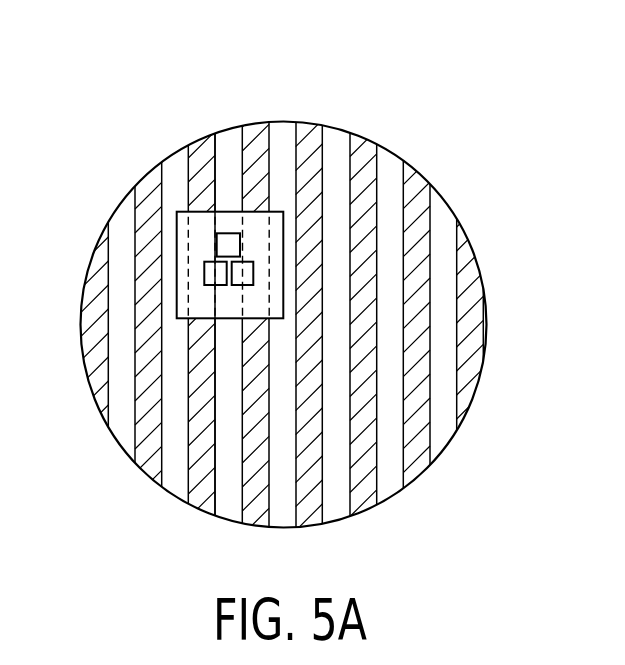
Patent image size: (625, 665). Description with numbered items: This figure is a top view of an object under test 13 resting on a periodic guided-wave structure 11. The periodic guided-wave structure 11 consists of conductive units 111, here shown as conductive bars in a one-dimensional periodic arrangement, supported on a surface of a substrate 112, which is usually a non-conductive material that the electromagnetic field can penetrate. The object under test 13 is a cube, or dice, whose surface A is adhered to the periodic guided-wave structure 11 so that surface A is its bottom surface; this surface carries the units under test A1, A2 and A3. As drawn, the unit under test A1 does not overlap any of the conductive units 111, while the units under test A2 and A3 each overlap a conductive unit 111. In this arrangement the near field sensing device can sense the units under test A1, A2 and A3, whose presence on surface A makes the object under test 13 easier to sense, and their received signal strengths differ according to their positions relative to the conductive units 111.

The periodic guided-wave structure 11 is at (343, 60).
The conductive units 111 is at (253, 133).
The substrate 112 is at (333, 145).
The object under test 13 is at (227, 221).
The unit under test A1 is at (233, 246).
The unit under test A2 is at (212, 276).
The unit under test A3 is at (238, 280).